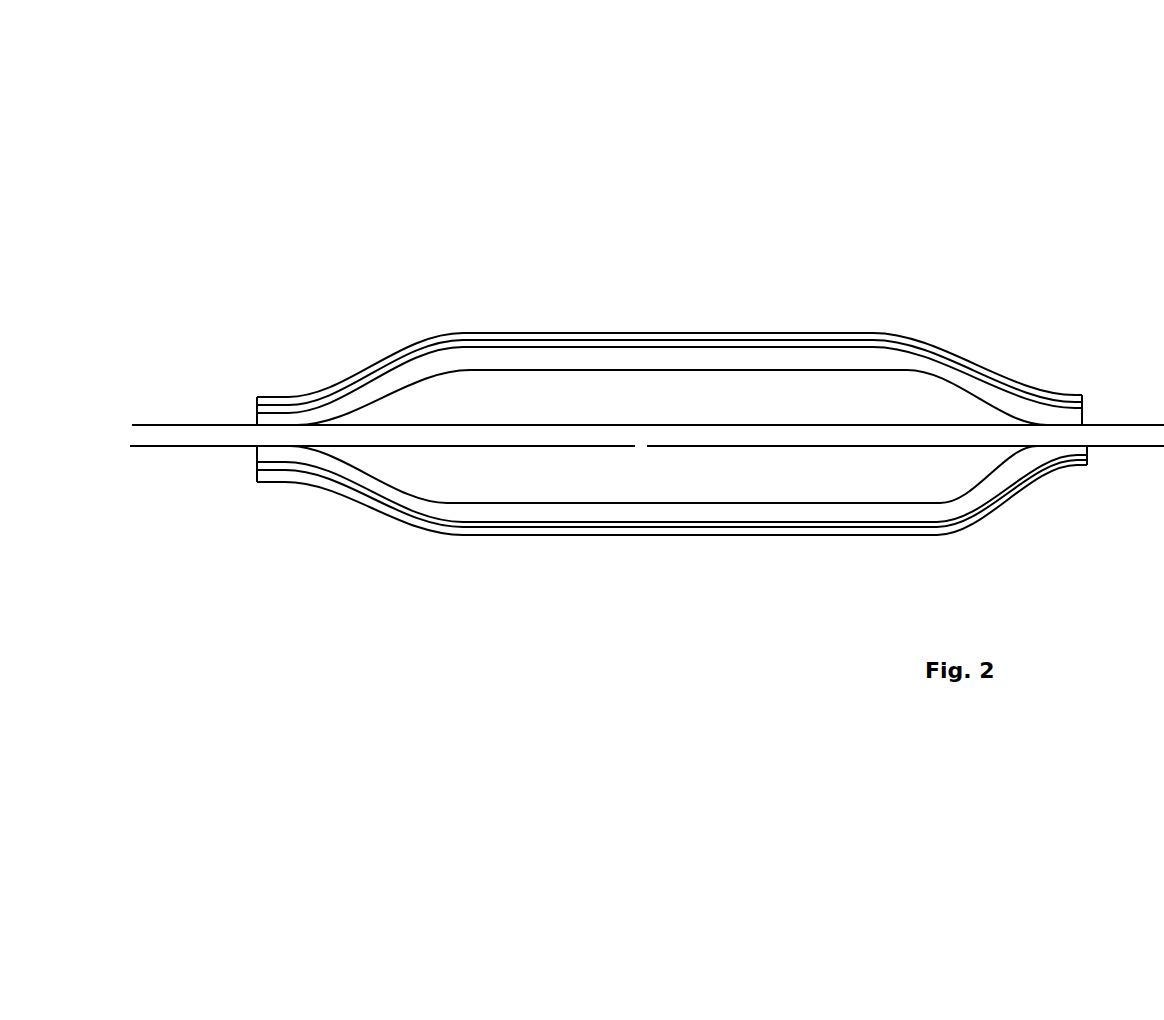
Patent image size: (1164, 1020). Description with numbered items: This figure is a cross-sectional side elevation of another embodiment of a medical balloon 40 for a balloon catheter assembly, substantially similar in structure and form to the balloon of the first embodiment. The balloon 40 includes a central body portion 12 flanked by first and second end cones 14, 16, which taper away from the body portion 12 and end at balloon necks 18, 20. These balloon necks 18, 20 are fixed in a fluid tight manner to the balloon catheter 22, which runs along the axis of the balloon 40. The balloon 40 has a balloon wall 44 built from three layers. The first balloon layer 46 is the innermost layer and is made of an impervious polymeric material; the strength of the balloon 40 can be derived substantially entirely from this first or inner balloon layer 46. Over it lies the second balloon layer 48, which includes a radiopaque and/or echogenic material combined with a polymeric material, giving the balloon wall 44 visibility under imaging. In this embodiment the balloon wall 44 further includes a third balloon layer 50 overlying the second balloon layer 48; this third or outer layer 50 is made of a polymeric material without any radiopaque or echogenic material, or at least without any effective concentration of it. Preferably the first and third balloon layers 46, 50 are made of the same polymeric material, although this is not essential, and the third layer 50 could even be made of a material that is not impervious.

The body portion 12 is at (915, 303).
The first end cone 14 is at (1088, 303).
The second end cone 16 is at (432, 303).
The balloon neck 18 is at (1090, 388).
The balloon neck 20 is at (249, 386).
The balloon catheter 22 is at (1131, 450).
The balloon 40 is at (1032, 140).
The balloon wall 44 is at (713, 460).
The first balloon layer 46 is at (469, 484).
The second balloon layer 48 is at (557, 529).
The third balloon layer 50 is at (631, 539).